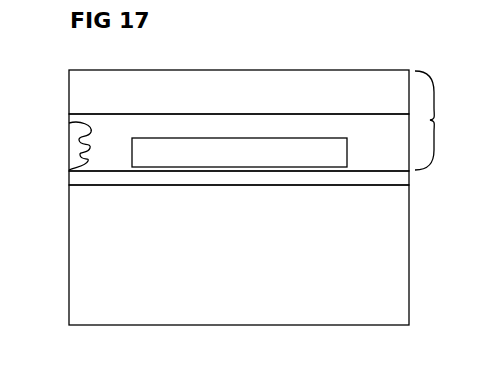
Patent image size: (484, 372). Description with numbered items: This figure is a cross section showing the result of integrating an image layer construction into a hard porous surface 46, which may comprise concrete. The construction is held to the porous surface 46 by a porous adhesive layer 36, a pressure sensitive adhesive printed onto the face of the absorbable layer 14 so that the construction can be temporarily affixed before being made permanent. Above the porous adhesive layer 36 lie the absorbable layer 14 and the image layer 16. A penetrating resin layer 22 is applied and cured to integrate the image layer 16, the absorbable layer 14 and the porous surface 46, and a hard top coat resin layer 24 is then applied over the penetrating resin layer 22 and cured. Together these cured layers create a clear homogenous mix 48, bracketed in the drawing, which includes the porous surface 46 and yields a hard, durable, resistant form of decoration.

The absorbable layer 14 is at (75, 149).
The image layer 16 is at (334, 143).
The penetrating resin layer 22 is at (243, 127).
The hard top coat resin layer 24 is at (313, 80).
The porous adhesive layer 36 is at (402, 177).
The hard porous surface 46 is at (218, 310).
The homogenous mix 48 is at (438, 120).